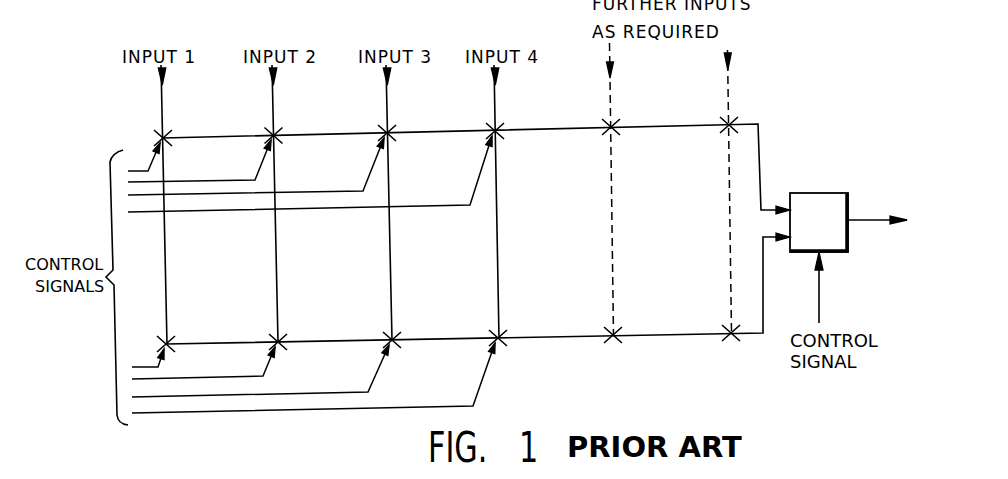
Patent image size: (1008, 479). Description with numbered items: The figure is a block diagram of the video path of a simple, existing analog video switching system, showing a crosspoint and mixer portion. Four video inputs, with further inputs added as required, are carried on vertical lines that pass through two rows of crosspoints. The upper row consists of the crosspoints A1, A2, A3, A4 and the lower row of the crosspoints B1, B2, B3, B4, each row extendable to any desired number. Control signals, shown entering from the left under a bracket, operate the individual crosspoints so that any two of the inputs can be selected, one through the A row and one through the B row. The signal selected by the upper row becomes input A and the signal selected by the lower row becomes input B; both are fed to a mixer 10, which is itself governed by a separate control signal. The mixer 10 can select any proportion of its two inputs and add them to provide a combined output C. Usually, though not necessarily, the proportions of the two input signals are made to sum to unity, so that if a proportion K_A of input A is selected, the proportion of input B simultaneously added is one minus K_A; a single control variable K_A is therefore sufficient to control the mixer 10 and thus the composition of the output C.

The mixer 10 is at (823, 193).
The input A is at (761, 163).
The input B is at (763, 297).
The combined output C is at (863, 220).
The crosspoint A1 is at (152, 129).
The crosspoint A2 is at (263, 127).
The crosspoint A3 is at (372, 125).
The crosspoint A4 is at (483, 123).
The crosspoint B1 is at (156, 337).
The crosspoint B2 is at (265, 334).
The crosspoint B3 is at (375, 332).
The crosspoint B4 is at (484, 330).